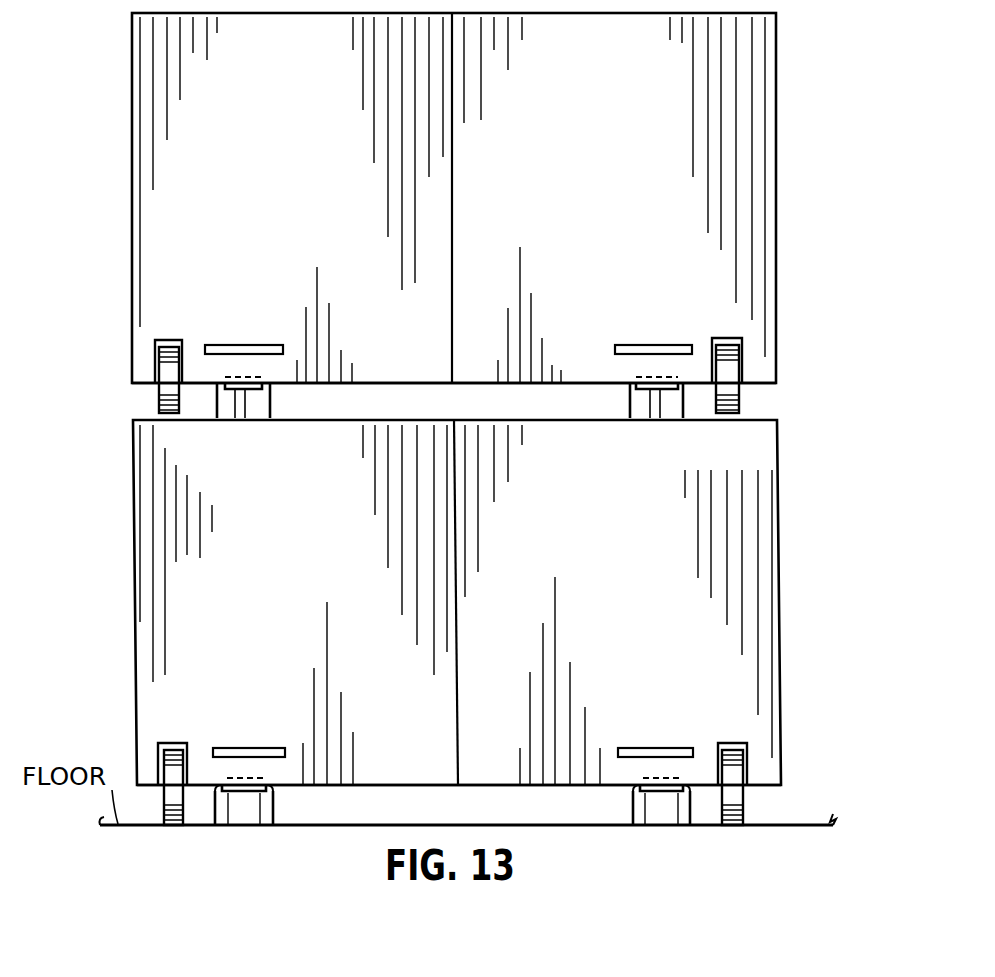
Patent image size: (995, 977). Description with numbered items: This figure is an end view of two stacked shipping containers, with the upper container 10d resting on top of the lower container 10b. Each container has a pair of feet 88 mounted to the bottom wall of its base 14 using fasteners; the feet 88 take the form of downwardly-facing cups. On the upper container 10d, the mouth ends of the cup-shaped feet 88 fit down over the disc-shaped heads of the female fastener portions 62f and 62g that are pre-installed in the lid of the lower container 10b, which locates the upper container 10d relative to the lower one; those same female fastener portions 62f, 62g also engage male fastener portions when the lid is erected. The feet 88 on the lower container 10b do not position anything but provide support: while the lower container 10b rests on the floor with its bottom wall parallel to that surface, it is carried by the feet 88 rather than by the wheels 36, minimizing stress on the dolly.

The upper container 10d is at (777, 190).
The lower container 10b is at (777, 490).
The base 14 is at (380, 386).
The wheels 36 is at (180, 405).
The feet 88 is at (226, 412).
The female fastener portion 62f is at (247, 418).
The female fastener portion 62g is at (658, 392).